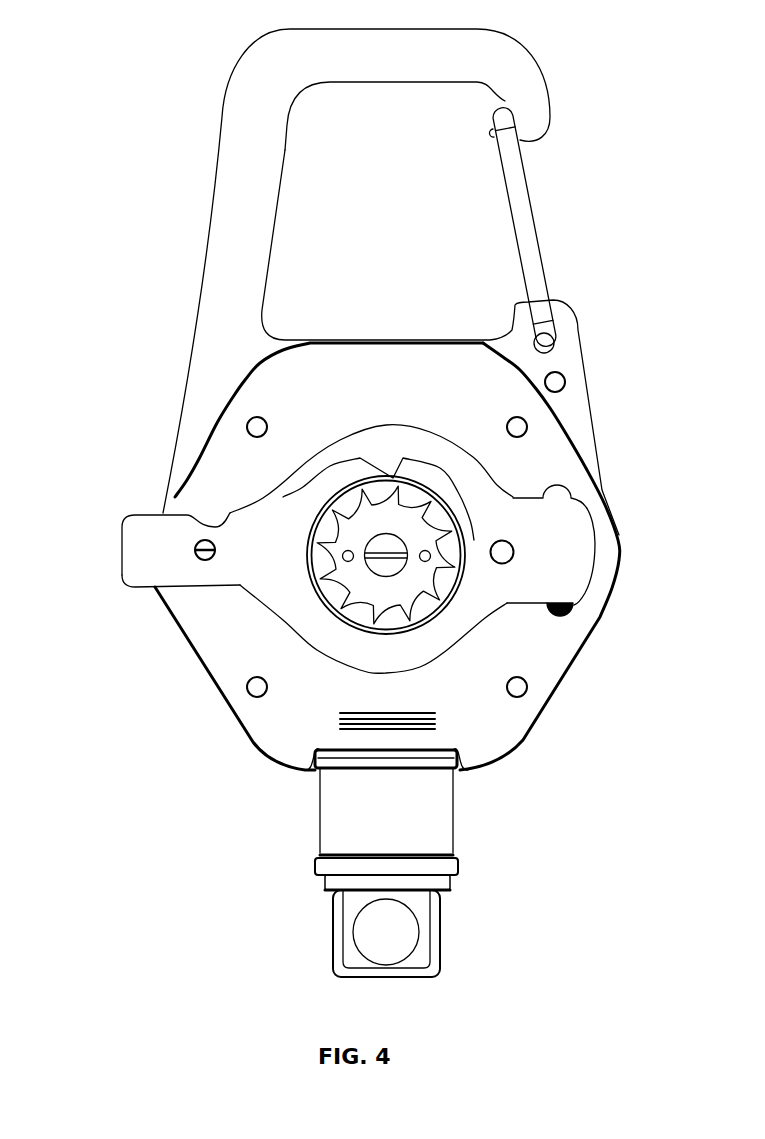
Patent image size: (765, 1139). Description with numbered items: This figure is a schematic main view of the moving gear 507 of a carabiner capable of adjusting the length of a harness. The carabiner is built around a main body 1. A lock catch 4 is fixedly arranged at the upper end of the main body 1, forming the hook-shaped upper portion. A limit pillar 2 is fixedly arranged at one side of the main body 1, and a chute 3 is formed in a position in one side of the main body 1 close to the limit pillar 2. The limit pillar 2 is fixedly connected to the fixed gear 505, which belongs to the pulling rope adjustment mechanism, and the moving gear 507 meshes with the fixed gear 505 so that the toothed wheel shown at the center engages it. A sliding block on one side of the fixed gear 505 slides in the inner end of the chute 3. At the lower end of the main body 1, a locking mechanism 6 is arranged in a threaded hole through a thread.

The lock catch 4 is at (198, 242).
The main body 1 is at (240, 445).
The fixed gear 505 is at (338, 460).
The moving gear 507 is at (367, 578).
The chute 3 is at (620, 470).
The limit pillar 2 is at (615, 663).
The locking mechanism 6 is at (492, 866).